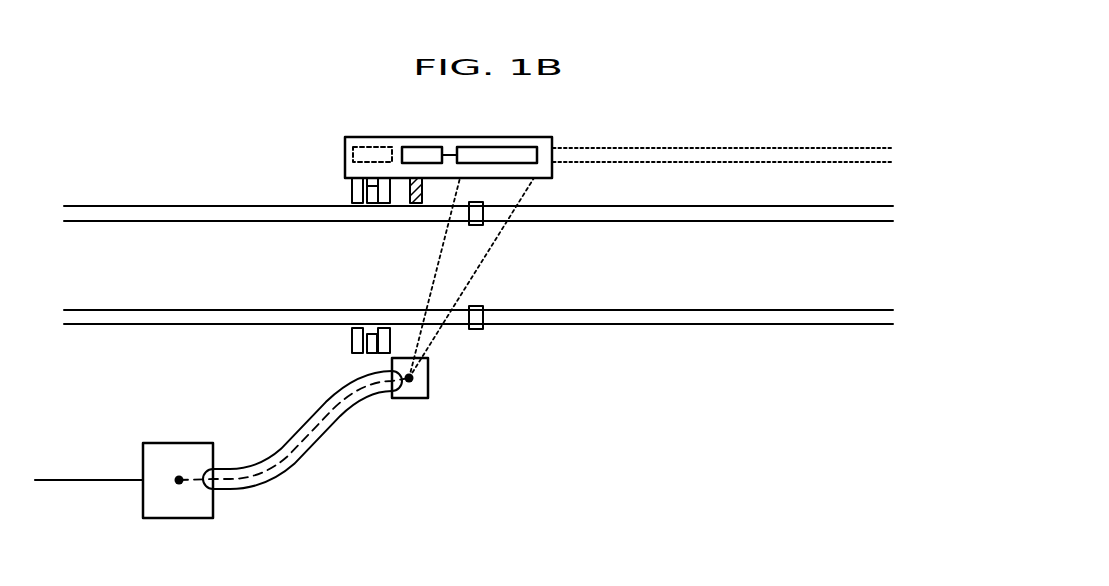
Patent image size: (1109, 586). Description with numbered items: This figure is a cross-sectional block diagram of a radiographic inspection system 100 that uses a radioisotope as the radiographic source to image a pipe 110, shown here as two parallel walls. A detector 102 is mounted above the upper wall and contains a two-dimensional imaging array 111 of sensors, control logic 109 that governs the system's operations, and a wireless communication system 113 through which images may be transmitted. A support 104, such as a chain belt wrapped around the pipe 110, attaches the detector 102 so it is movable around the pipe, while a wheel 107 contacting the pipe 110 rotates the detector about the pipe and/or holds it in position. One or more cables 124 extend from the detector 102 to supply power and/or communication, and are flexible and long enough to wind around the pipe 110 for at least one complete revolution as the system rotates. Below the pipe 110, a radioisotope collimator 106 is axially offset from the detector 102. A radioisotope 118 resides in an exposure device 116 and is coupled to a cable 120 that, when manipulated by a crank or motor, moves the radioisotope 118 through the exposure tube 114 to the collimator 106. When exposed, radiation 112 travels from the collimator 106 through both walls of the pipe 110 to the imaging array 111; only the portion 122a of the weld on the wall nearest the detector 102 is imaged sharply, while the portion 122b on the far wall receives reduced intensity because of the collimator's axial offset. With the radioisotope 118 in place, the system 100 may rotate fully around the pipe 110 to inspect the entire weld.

The radiographic inspection system 100 is at (266, 102).
The detector 102 is at (345, 158).
The support 104 is at (352, 198).
The radioisotope collimator 106 is at (428, 380).
The wheel 107 is at (410, 192).
The control logic 109 is at (422, 147).
The pipe 110 is at (212, 205).
The two-dimensional imaging array 111 is at (510, 147).
The radiation 112 is at (435, 265).
The wireless communication system 113 is at (372, 147).
The exposure tube 114 is at (330, 435).
The exposure device 116 is at (208, 517).
The radioisotope 118 is at (179, 480).
The cable 120 is at (102, 480).
The portion of the weld 122a is at (483, 224).
The portion of the weld 122b is at (483, 316).
The cables 124 is at (677, 148).